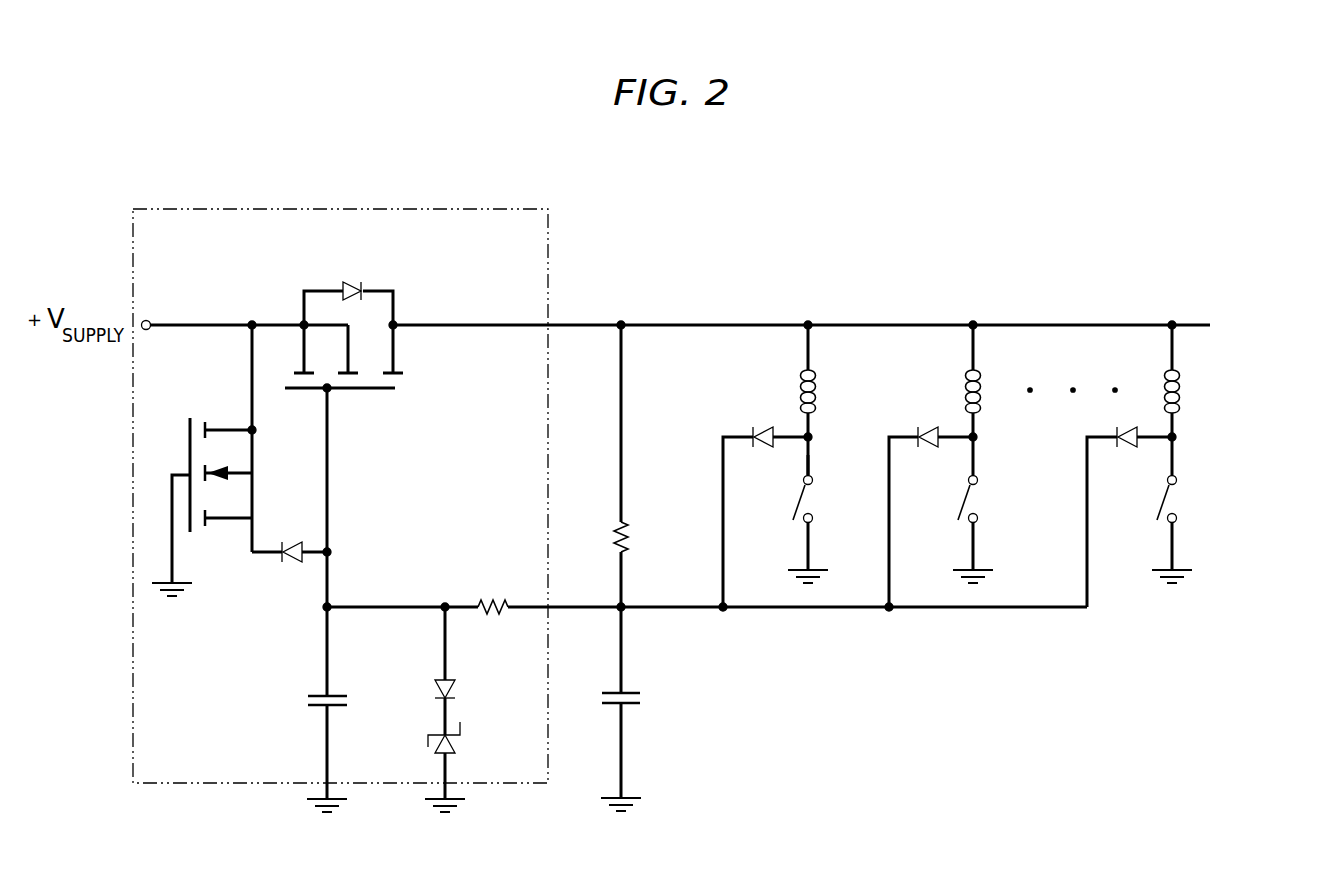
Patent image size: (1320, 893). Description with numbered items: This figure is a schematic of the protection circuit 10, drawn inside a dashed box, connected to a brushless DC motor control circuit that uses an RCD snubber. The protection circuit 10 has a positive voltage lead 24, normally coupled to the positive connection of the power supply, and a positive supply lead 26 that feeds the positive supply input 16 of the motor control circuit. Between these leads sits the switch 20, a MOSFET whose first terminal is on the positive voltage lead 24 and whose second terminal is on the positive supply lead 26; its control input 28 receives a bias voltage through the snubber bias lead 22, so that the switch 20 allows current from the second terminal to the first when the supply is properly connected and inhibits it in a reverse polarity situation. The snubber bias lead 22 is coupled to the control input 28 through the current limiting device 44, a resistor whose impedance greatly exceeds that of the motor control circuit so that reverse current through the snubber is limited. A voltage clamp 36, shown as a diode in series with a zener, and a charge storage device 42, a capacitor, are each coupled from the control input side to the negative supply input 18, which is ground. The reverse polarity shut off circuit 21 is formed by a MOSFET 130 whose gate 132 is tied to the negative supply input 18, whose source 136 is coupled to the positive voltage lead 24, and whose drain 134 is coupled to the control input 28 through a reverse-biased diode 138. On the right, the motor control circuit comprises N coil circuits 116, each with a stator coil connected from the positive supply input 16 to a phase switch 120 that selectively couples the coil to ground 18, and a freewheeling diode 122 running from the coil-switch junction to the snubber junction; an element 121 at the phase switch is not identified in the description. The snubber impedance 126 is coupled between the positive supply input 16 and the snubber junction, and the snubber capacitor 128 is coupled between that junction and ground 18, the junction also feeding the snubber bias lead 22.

The protection circuit 10 is at (368, 209).
The positive supply input 16 is at (738, 325).
The negative supply input 18 is at (172, 576).
The switch 20 is at (405, 256).
The reverse polarity shut off circuit 21 is at (228, 618).
The snubber bias lead 22 is at (548, 608).
The positive voltage lead 24 is at (150, 324).
The positive supply lead 26 is at (548, 325).
The control input 28 is at (331, 606).
The voltage clamp 36 is at (412, 702).
The charge storage device 42 is at (340, 705).
The current limiting device 44 is at (493, 600).
The coil circuits 116 is at (1262, 331).
The phase switch 120 is at (832, 495).
The switch contact 121 is at (808, 466).
The freewheeling diode 122 is at (765, 446).
The snubber impedance 126 is at (621, 517).
The snubber capacitor 128 is at (632, 704).
The MOSFET 130 is at (292, 440).
The gate 132 is at (172, 508).
The drain 134 is at (252, 540).
The source 136 is at (252, 381).
The reverse-biased diode 138 is at (296, 560).